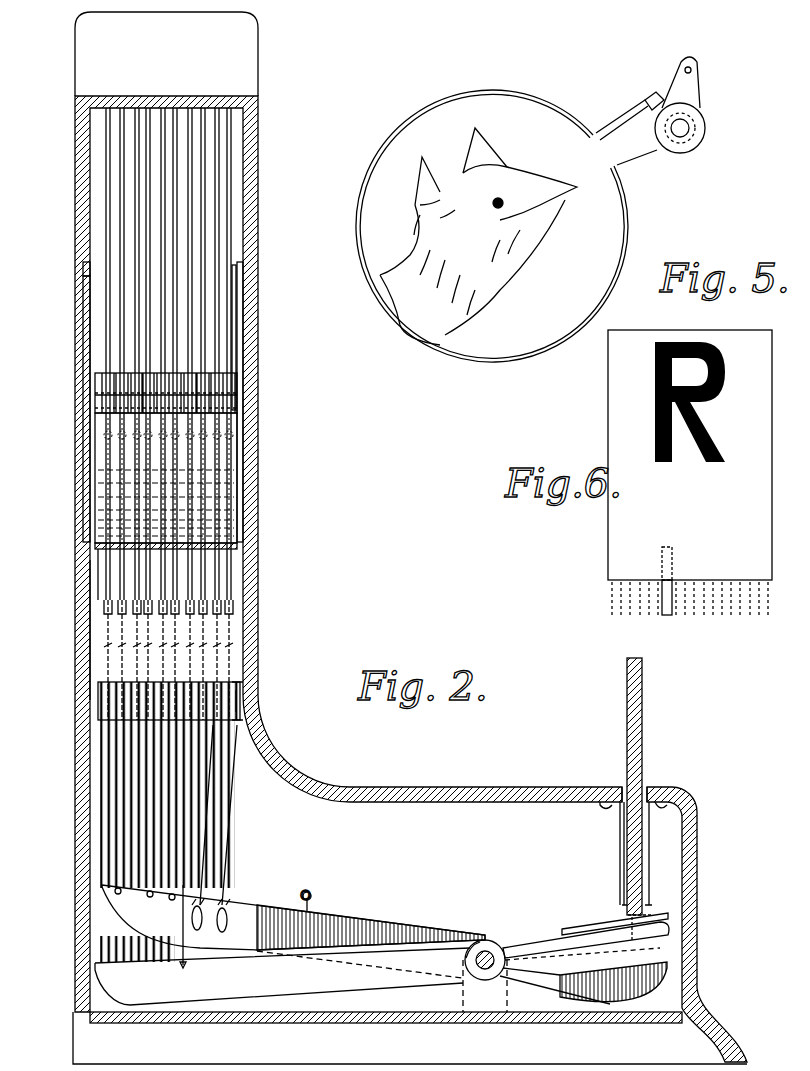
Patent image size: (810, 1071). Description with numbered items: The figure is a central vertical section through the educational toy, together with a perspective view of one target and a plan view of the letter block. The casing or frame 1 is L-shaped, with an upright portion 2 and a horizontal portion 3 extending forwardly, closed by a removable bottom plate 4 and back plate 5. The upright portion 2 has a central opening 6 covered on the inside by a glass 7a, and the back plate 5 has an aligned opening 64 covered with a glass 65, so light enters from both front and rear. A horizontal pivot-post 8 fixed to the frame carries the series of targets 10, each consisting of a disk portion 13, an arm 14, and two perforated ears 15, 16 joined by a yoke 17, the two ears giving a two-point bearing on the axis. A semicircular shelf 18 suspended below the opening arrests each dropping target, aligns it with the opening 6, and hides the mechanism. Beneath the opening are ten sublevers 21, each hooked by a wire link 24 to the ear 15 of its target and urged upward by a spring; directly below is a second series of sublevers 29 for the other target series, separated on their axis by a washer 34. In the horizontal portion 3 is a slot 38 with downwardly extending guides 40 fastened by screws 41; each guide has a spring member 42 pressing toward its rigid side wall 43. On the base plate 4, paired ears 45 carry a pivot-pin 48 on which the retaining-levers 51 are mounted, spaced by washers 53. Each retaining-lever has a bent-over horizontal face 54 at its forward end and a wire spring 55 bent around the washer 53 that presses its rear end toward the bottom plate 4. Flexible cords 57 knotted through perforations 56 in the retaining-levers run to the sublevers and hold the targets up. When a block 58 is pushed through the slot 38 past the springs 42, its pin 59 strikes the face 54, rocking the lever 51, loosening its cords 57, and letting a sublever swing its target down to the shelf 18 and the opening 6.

In FIG. 2, the casing or frame 1 is at (185, 353).
In FIG. 2, the upright portion 2 is at (258, 181).
In FIG. 2, the horizontal portion 3 is at (616, 912).
In FIG. 2, the bottom plate 4 is at (432, 1023).
In FIG. 2, the back plate 5 is at (80, 672).
In FIG. 2, the central opening 6 is at (255, 317).
In FIG. 2, the glass 7a is at (243, 406).
In FIG. 2, the pivot-post 8 is at (100, 402).
In FIG. 2, the targets 10 is at (160, 414).
In FIG. 5, the disk portion 13 is at (492, 226).
In FIG. 5, the arm 14 is at (617, 128).
In FIG. 5, the perforated ear 15 is at (672, 82).
In FIG. 5, the perforated ear 16 is at (706, 128).
In FIG. 5, the yoke 17 is at (655, 100).
In FIG. 2, the semicircular shelf 18 is at (105, 508).
In FIG. 2, the sublevers 21 is at (97, 629).
In FIG. 2, the wire link 24 is at (97, 580).
In FIG. 2, the sublevers 29 is at (98, 723).
In FIG. 2, the washer 34 is at (236, 713).
In FIG. 2, the slot 38 is at (642, 790).
In FIG. 2, the guides 40 is at (620, 838).
In FIG. 2, the screws 41 is at (608, 805).
In FIG. 2, the spring member 42 is at (624, 855).
In FIG. 2, the side wall 43 is at (649, 880).
In FIG. 2, the ears 45 is at (485, 986).
In FIG. 2, the pivot-pin 48 is at (485, 950).
In FIG. 2, the retaining-levers 51 is at (290, 945).
In FIG. 2, the washers 53 is at (506, 960).
In FIG. 2, the horizontal face 54 is at (585, 927).
In FIG. 2, the spring 55 is at (466, 956).
In FIG. 2, the perforations 56 is at (232, 905).
In FIG. 2, the flexible cord 57 is at (97, 812).
In FIG. 2, the blocks 58 is at (642, 707).
In FIG. 6, the blocks 58 is at (690, 488).
In FIG. 2, the pin 59 is at (640, 915).
In FIG. 6, the pin 59 is at (670, 590).
In FIG. 2, the opening 64 is at (87, 290).
In FIG. 2, the glass 65 is at (88, 328).